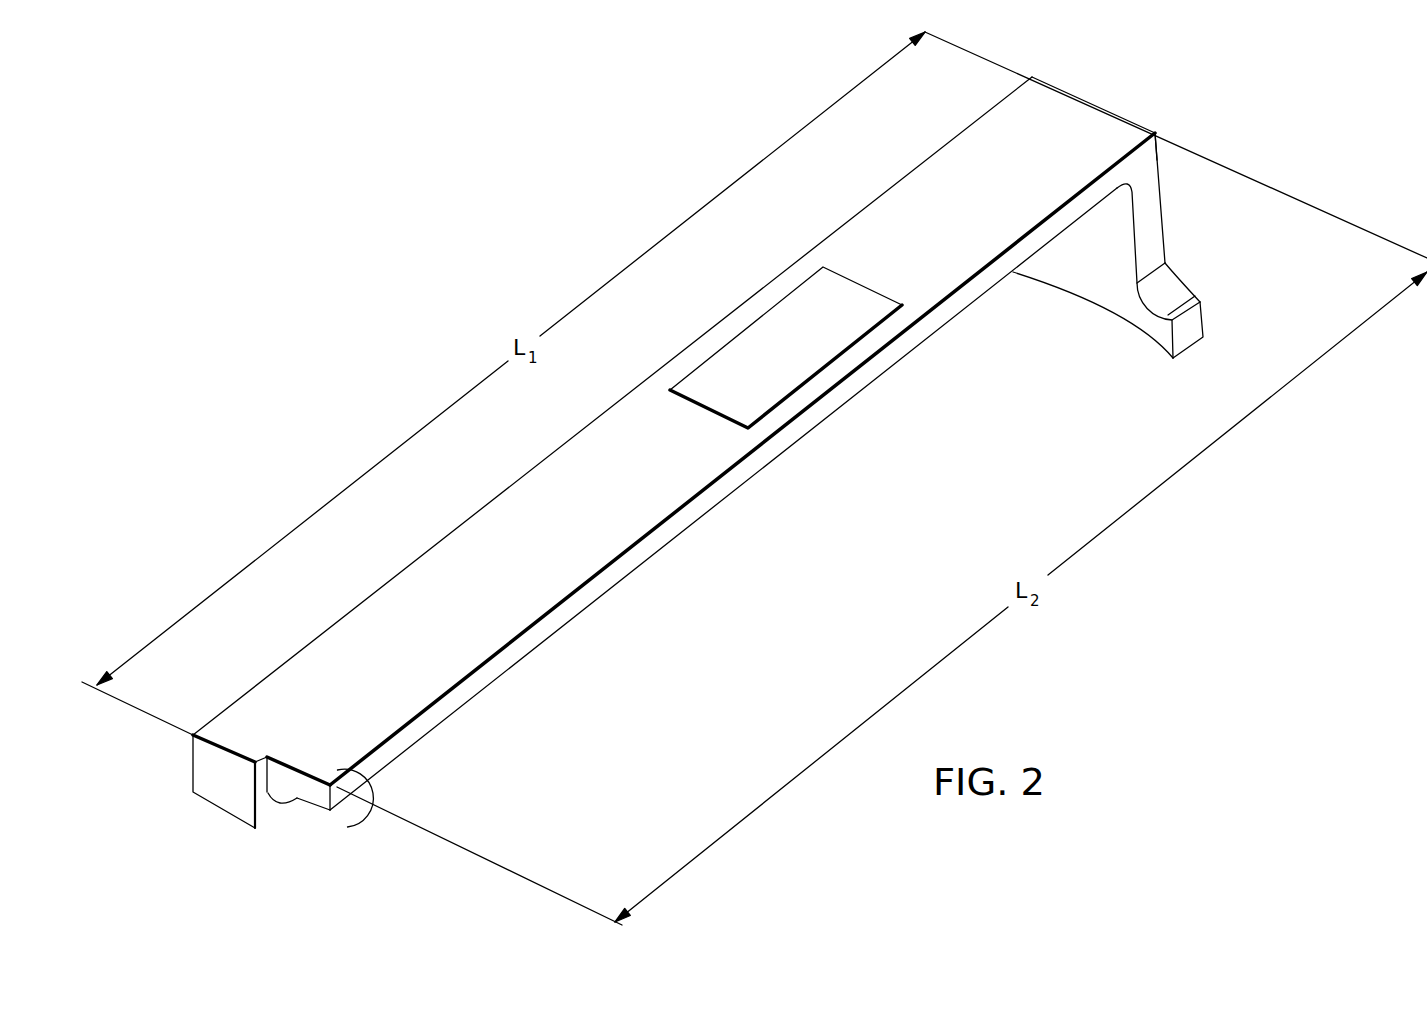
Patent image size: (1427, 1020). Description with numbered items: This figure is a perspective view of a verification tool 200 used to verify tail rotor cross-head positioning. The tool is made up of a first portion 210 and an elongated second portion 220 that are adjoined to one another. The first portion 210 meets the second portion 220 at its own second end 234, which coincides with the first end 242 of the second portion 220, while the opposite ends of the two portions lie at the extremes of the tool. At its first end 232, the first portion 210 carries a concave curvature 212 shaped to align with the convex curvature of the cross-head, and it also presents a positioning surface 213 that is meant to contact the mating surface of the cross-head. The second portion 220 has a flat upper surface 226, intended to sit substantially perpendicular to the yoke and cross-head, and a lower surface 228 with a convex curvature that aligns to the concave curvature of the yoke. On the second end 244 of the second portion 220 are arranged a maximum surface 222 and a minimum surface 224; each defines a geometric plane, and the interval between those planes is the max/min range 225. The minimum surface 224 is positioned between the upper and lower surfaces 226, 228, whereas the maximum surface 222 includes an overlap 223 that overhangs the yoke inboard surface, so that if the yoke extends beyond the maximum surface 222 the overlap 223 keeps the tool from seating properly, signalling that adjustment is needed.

The verification tool 200 is at (494, 158).
The first portion 210 is at (1181, 240).
The concave curvature 212 is at (1098, 308).
The positioning surface 213 is at (1165, 195).
The second portion 220 is at (728, 297).
The maximum surface 222 is at (268, 806).
The overlap 223 is at (222, 798).
The minimum surface 224 is at (318, 790).
The max/min range 225 is at (290, 797).
The upper surface 226 is at (528, 490).
The lower surface 228 is at (303, 807).
The first end 232 is at (1190, 347).
The second end 234 is at (1070, 96).
The first end 242 is at (1152, 131).
The second end 244 is at (348, 827).